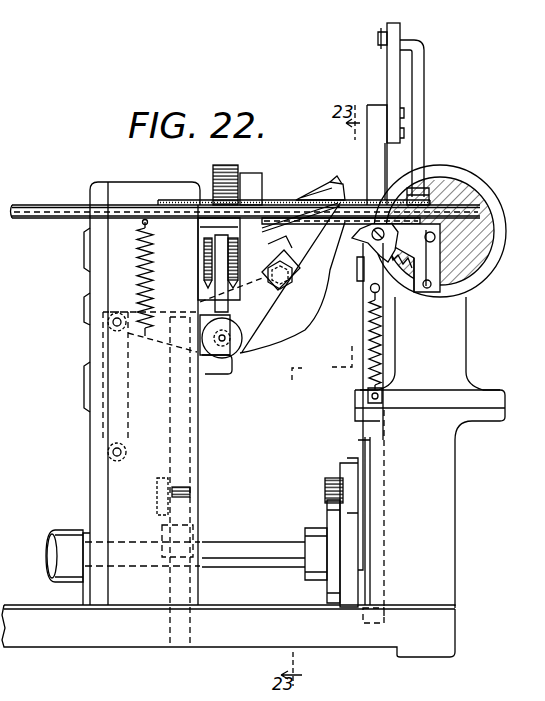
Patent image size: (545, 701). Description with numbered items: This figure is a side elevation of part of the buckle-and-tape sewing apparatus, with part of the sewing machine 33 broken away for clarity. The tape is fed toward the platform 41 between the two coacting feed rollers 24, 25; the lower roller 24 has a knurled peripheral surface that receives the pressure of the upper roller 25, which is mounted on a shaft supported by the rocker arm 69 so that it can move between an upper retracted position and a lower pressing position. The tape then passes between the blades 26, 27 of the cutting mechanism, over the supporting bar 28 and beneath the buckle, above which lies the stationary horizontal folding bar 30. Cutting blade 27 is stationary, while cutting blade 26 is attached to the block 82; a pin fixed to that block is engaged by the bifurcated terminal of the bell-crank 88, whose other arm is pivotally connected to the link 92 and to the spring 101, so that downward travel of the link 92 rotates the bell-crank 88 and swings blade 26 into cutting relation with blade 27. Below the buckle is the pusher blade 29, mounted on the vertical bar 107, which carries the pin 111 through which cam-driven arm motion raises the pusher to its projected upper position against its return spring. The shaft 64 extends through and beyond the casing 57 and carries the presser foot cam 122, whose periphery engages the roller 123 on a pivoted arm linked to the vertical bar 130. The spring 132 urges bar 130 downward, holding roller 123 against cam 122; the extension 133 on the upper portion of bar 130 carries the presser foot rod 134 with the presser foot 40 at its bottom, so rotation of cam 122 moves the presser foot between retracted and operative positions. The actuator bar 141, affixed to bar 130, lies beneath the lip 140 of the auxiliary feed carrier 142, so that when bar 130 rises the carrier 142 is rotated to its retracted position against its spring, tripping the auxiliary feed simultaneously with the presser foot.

The feed roller 24 is at (203, 268).
The upper roller 25 is at (225, 165).
The cutting blade 26 is at (272, 244).
The cutting blade 27 is at (279, 200).
The supporting bar 28 is at (200, 229).
The pusher blade 29 is at (218, 283).
The folding bar 30 is at (188, 200).
The sewing machine 33 is at (510, 217).
The presser foot 40 is at (445, 190).
The platform 41 is at (63, 219).
The casing 57 is at (142, 191).
The shaft 64 is at (249, 546).
The rocker arm 69 is at (256, 181).
The block 82 is at (334, 184).
The bell-crank 88 is at (263, 312).
The link 92 is at (104, 425).
The spring 101 is at (136, 280).
The vertical bar 107 is at (172, 430).
The pin 111 is at (191, 496).
The presser foot cam 122 is at (328, 590).
The roller 123 is at (328, 490).
The vertical bar 130 is at (367, 292).
The spring 132 is at (378, 353).
The extension 133 is at (390, 80).
The presser foot rod 134 is at (424, 122).
The lip 140 is at (355, 240).
The actuator bar 141 is at (356, 264).
The auxiliary feed carrier 142 is at (429, 243).